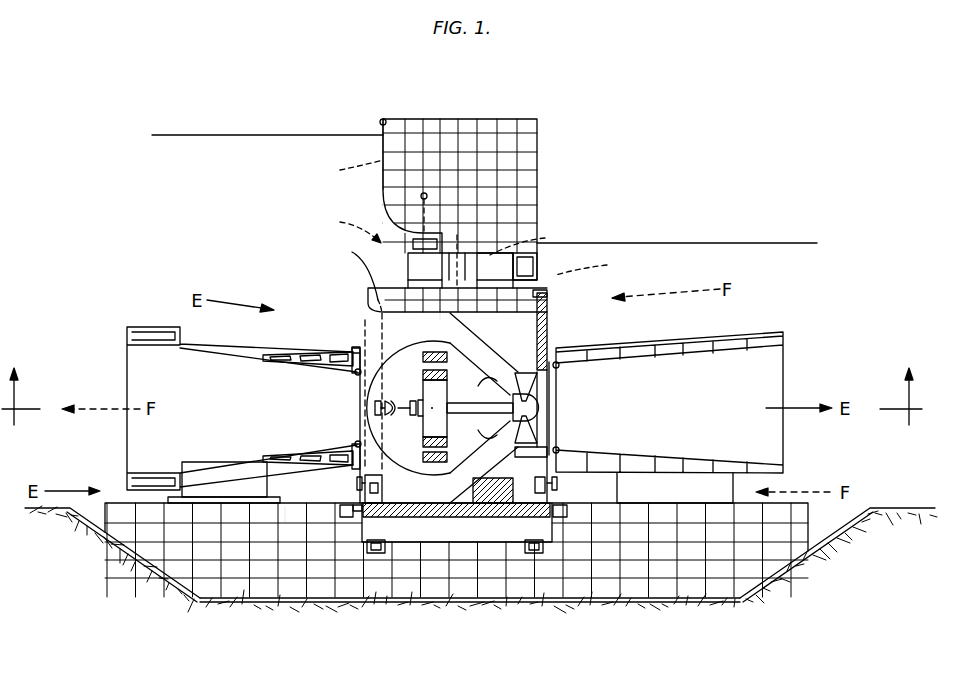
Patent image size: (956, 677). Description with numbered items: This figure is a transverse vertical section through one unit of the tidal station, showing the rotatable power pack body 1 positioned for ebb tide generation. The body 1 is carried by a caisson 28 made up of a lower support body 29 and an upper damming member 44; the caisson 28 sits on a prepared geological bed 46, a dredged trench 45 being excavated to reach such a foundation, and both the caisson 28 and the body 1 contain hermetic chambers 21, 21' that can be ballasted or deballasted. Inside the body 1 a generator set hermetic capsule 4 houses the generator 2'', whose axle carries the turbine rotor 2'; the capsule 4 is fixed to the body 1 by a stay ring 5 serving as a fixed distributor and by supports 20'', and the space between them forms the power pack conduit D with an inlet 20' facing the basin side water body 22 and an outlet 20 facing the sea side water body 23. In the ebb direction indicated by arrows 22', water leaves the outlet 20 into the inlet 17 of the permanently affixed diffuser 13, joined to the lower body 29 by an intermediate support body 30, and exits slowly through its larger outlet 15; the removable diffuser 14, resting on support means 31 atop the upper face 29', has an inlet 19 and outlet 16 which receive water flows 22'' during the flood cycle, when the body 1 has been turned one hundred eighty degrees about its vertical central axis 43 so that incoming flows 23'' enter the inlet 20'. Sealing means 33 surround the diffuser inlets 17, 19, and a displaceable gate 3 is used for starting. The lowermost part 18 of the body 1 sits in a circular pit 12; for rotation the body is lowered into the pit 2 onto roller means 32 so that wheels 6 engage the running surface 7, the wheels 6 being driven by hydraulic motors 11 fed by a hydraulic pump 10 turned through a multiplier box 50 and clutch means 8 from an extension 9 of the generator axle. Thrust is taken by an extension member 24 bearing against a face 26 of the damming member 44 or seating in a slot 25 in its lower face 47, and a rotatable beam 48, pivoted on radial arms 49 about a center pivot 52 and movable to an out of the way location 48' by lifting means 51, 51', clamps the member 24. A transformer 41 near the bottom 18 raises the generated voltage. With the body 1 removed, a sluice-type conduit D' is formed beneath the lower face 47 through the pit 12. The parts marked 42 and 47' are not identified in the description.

The rotatable power pack body 1 is at (359, 273).
The pit 2 is at (462, 394).
The turbine rotor 2' is at (526, 408).
The generator 2'' is at (435, 408).
The displaceable gate 3 is at (549, 337).
The generator set hermetic capsule 4 is at (408, 313).
The stay ring 5 is at (469, 356).
The wheels 6 is at (356, 485).
The running surface 7 is at (352, 518).
The clutch means 8 is at (390, 398).
The generator axle extension 9 is at (413, 418).
The hydraulic pump 10 is at (374, 405).
The hydraulic motors 11 is at (383, 488).
The circular pit 12 is at (430, 538).
The permanently affixed diffuser 13 is at (670, 412).
The removable diffuser 14 is at (223, 402).
The diffuser outlet 15 is at (785, 430).
The diffuser outlet 16 is at (126, 432).
The diffuser inlet 17 is at (557, 436).
The lowermost part of power pack body 18 is at (472, 504).
The diffuser inlet 19 is at (362, 422).
The outlet 20 is at (572, 408).
The inlet 20' is at (349, 363).
The supports 20'' is at (336, 394).
The hermetic chambers 21 is at (455, 324).
The hermetic chambers 21' is at (427, 324).
The basin side water body 22 is at (267, 110).
The air flow direction 22' is at (161, 387).
The water flows 22'' is at (446, 381).
The sea side water body 23 is at (677, 216).
The incoming flows 23'' is at (802, 395).
The extension member 24 is at (417, 277).
The slot 25 is at (487, 277).
The face 26 is at (453, 242).
The caisson 28 is at (552, 151).
The lower support body 29 is at (456, 583).
The upper face 29' is at (285, 525).
The intermediate support body 30 is at (667, 500).
The support means 31 is at (215, 493).
The roller means 32 is at (378, 554).
The sealing means 33 is at (357, 369).
The transformer 41 is at (485, 500).
The seal 42 is at (506, 334).
The vertical central axis 43 is at (531, 237).
The upper damming member 44 is at (489, 119).
The dredged trench 45 is at (97, 528).
The prepared geological bed 46 is at (306, 617).
The lower face of upper damming member 47 is at (544, 262).
The ledge 47' is at (566, 283).
The rotatable beam 48 is at (399, 245).
The out of the way location 48' is at (347, 222).
The radial arms 49 is at (437, 225).
The rotatable multiplier box 50 is at (430, 380).
The lifting means 51 is at (366, 107).
The lifting means 51' is at (349, 163).
The center pivot 52 is at (421, 196).
The power pack conduit D is at (456, 521).
The sluice-type conduit D' is at (593, 262).